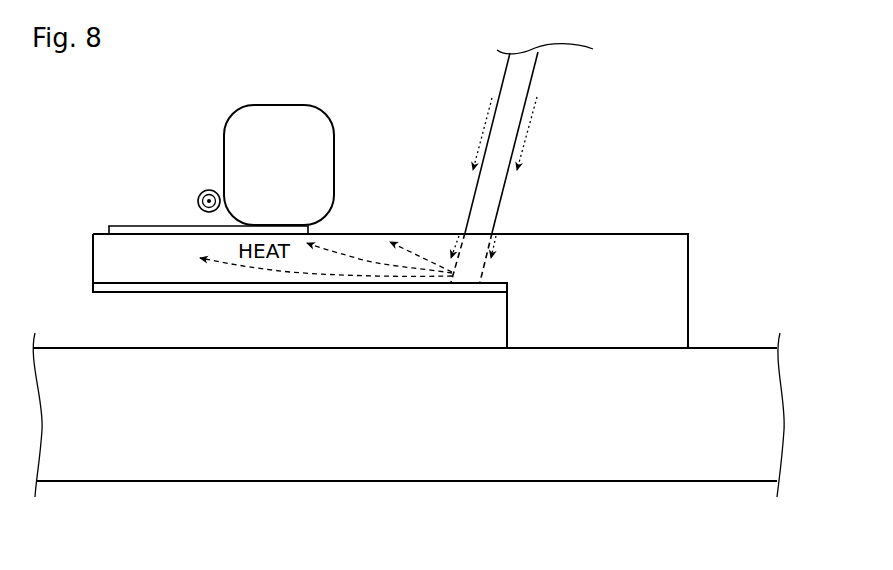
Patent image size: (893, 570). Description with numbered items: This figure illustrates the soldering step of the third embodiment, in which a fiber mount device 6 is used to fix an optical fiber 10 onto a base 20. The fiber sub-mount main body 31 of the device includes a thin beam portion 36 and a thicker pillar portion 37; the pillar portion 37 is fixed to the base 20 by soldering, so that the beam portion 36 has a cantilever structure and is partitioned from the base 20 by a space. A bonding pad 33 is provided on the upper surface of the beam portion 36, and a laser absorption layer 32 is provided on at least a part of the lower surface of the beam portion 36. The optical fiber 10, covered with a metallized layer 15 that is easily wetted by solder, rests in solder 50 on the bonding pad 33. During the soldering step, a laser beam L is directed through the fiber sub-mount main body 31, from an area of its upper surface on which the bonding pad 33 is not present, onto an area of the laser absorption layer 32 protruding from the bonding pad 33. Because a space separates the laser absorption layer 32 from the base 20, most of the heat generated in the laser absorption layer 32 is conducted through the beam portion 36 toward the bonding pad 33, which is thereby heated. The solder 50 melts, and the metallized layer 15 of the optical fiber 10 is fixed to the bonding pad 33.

The fiber mount device 6 is at (730, 113).
The optical fiber 10 is at (207, 190).
The metallized layer 15 is at (200, 190).
The base 20 is at (282, 468).
The fiber sub-mount main body 31 is at (663, 234).
The laser absorption layer 32 is at (108, 287).
The bonding pad 33 is at (143, 228).
The beam portion 36 is at (187, 245).
The pillar portion 37 is at (677, 315).
The solder 50 is at (267, 137).
The laser beam L is at (470, 193).